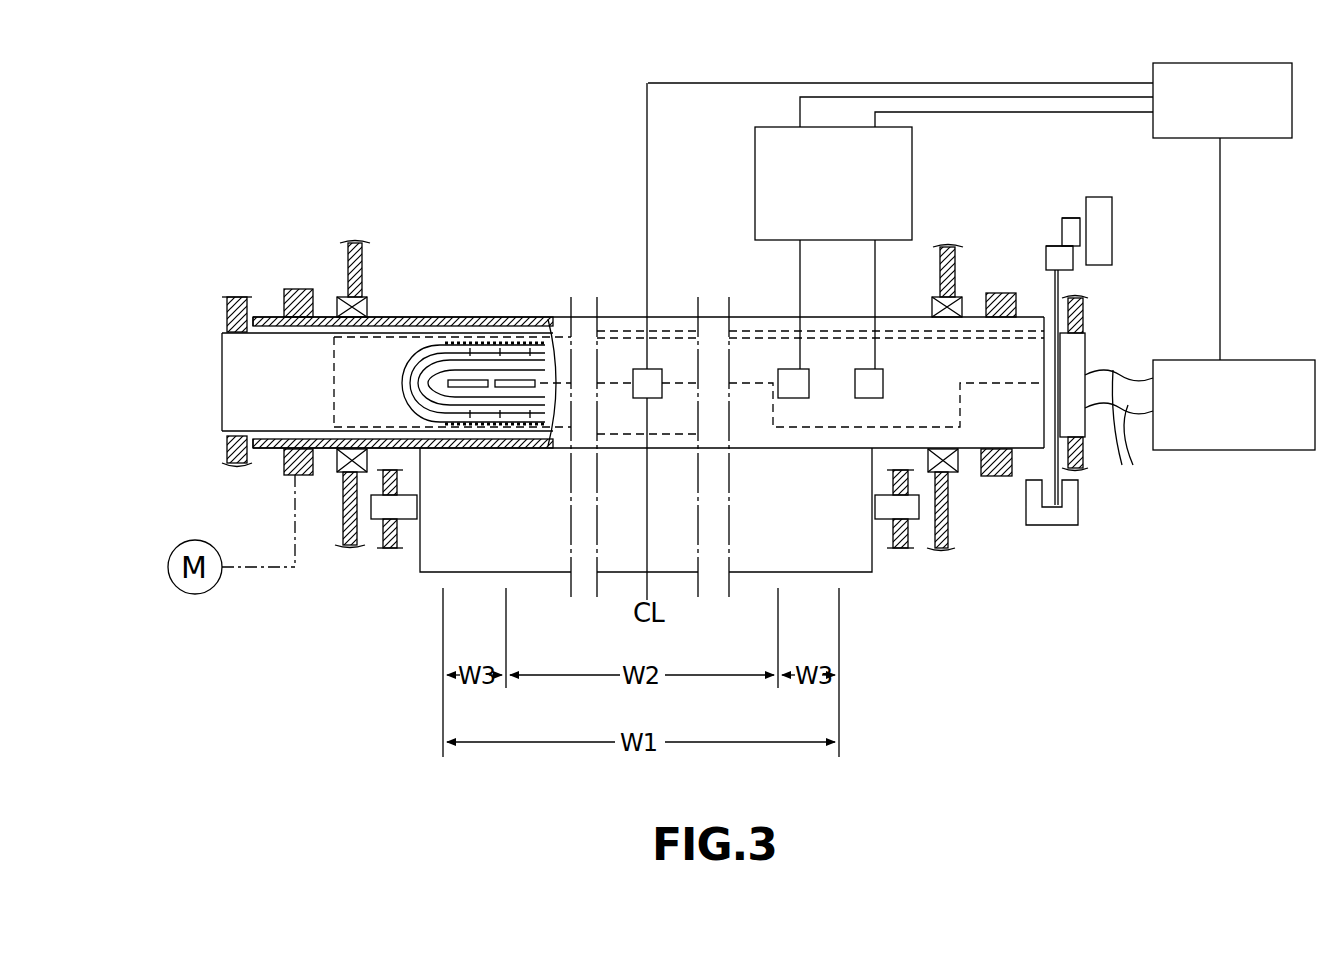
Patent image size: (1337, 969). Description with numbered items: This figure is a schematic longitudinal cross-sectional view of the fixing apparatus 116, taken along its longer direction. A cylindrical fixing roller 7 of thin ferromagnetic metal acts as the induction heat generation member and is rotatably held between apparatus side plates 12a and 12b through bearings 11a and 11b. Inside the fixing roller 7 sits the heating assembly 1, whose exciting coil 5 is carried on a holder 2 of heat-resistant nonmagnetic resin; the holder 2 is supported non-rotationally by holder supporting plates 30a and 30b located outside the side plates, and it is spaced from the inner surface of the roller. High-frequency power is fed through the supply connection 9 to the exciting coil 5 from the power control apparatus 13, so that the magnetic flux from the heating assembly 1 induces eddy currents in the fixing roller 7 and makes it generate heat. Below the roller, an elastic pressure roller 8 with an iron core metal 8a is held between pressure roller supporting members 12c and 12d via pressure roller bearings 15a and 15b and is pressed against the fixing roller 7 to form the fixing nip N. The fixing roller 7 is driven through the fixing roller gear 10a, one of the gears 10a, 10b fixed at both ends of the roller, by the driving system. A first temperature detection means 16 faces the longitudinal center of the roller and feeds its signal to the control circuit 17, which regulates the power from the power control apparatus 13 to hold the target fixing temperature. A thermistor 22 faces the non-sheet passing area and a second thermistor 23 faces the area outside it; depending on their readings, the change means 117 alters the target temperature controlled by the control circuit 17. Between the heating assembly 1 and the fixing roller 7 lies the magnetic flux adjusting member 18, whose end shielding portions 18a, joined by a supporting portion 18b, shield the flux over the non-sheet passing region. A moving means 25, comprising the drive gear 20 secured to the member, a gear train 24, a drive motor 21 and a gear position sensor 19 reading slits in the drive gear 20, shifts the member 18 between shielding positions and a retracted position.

The heating assembly 1 is at (445, 314).
The holder 2 is at (232, 362).
The exciting coil 5 is at (497, 358).
The fixing roller 7 is at (618, 312).
The pressure roller 8 is at (538, 576).
The core metal 8a is at (405, 520).
The power lead wires 9 is at (1119, 437).
The fixing roller gear 10a is at (297, 288).
The bearing 10b is at (1002, 293).
The bearing 11a is at (367, 313).
The bearing 11b is at (933, 310).
The apparatus side plate 12a is at (362, 263).
The apparatus side plate 12b is at (940, 263).
The pressure roller supporting member 12c is at (390, 553).
The pressure roller supporting member 12d is at (900, 550).
The power control apparatus 13 is at (1243, 360).
The pressure roller bearing 15a is at (380, 527).
The pressure roller bearing 15b is at (913, 530).
The first temperature detection means 16 is at (663, 373).
The control circuit 17 is at (1185, 68).
The magnetic flux adjusting member 18 is at (742, 322).
The shielding portion 18a is at (397, 415).
The supporting portion 18b is at (610, 388).
The gear position sensor 19 is at (1053, 525).
The magnetic flux adjusting member drive gear 20 is at (1059, 283).
The magnetic flux adjusting member drive motor 21 is at (1107, 210).
The thermistor 22 is at (787, 375).
The second thermistor 23 is at (865, 375).
The gear train 24 is at (1048, 247).
The moving means 25 is at (1040, 191).
The holder supporting plate 30a is at (228, 303).
The holder supporting plate 30b is at (1082, 313).
The fixing apparatus 116 is at (290, 167).
The change means 117 is at (760, 147).
The fixing nip N is at (655, 443).